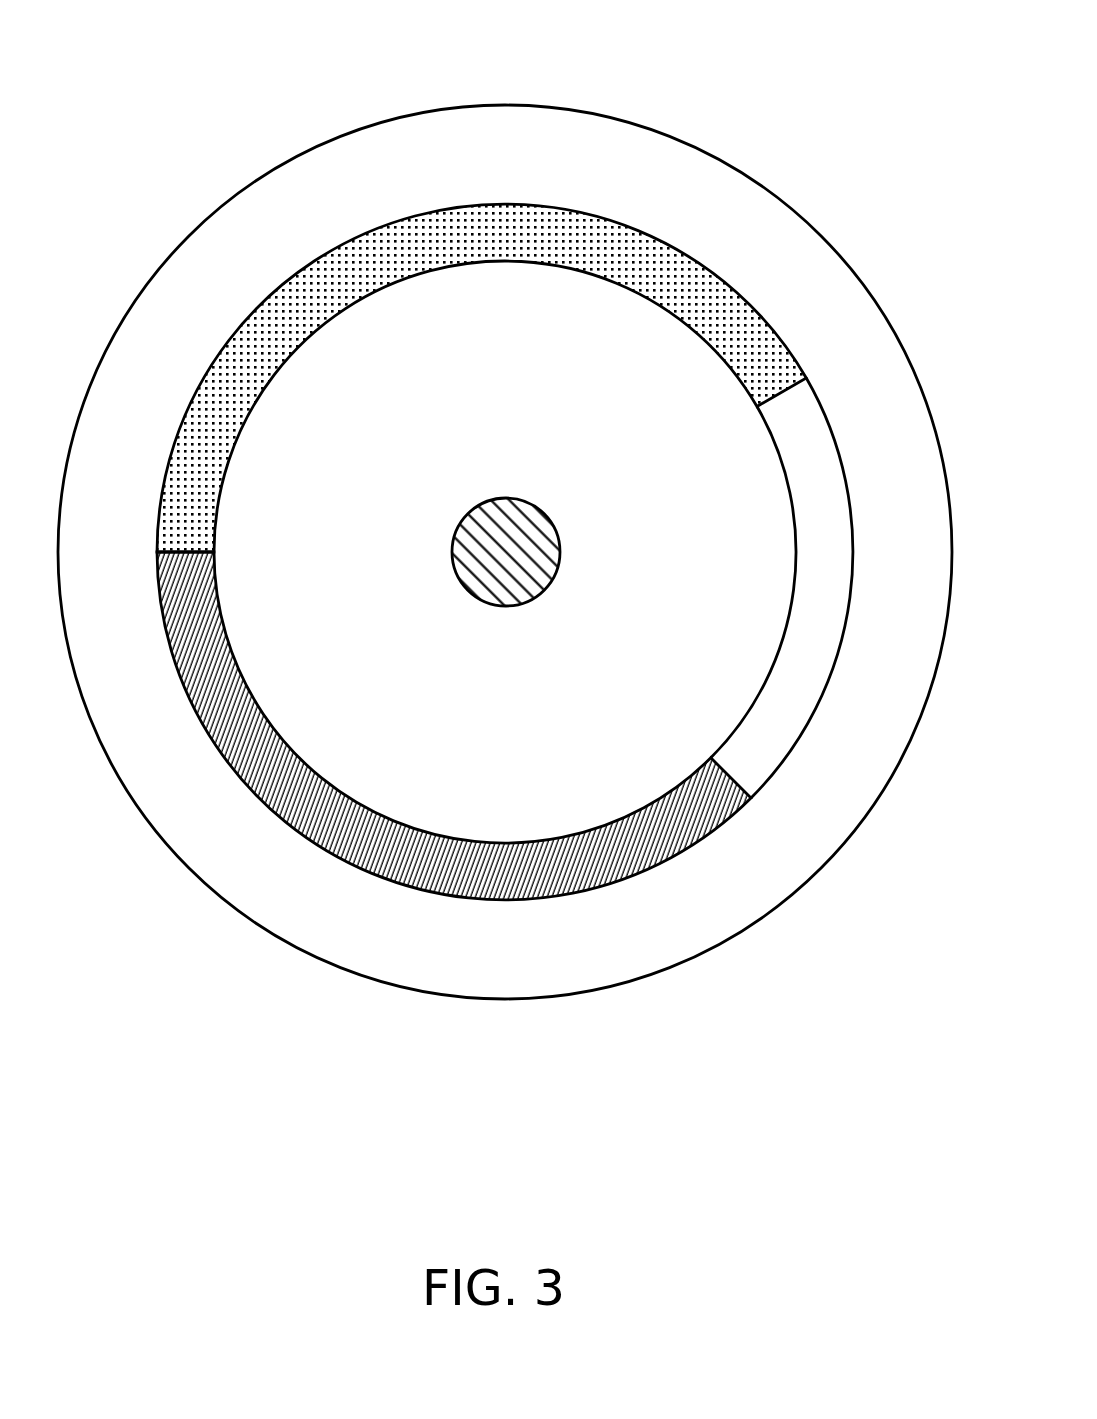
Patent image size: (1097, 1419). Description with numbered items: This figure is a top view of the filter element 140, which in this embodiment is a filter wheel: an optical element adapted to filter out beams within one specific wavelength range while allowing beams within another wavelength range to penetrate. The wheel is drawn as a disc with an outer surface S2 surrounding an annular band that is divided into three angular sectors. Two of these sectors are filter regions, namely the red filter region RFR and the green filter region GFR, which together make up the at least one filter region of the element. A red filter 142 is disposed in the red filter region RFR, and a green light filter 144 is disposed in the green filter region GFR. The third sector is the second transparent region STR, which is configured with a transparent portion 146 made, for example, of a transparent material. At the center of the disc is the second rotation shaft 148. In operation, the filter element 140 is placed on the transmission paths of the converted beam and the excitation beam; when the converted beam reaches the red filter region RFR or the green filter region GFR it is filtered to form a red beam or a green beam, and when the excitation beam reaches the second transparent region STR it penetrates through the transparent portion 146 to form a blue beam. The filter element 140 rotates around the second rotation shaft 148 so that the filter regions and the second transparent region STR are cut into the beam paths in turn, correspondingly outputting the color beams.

The filter element 140 is at (499, 566).
The red filter 142 is at (497, 227).
The green light filter 144 is at (237, 752).
The transparent portion 146 is at (790, 438).
The second rotation shaft 148 is at (510, 560).
The second surface S2 is at (167, 321).
The red filter region RFR is at (481, 280).
The green filter region GFR is at (424, 821).
The second transparent region STR is at (826, 562).